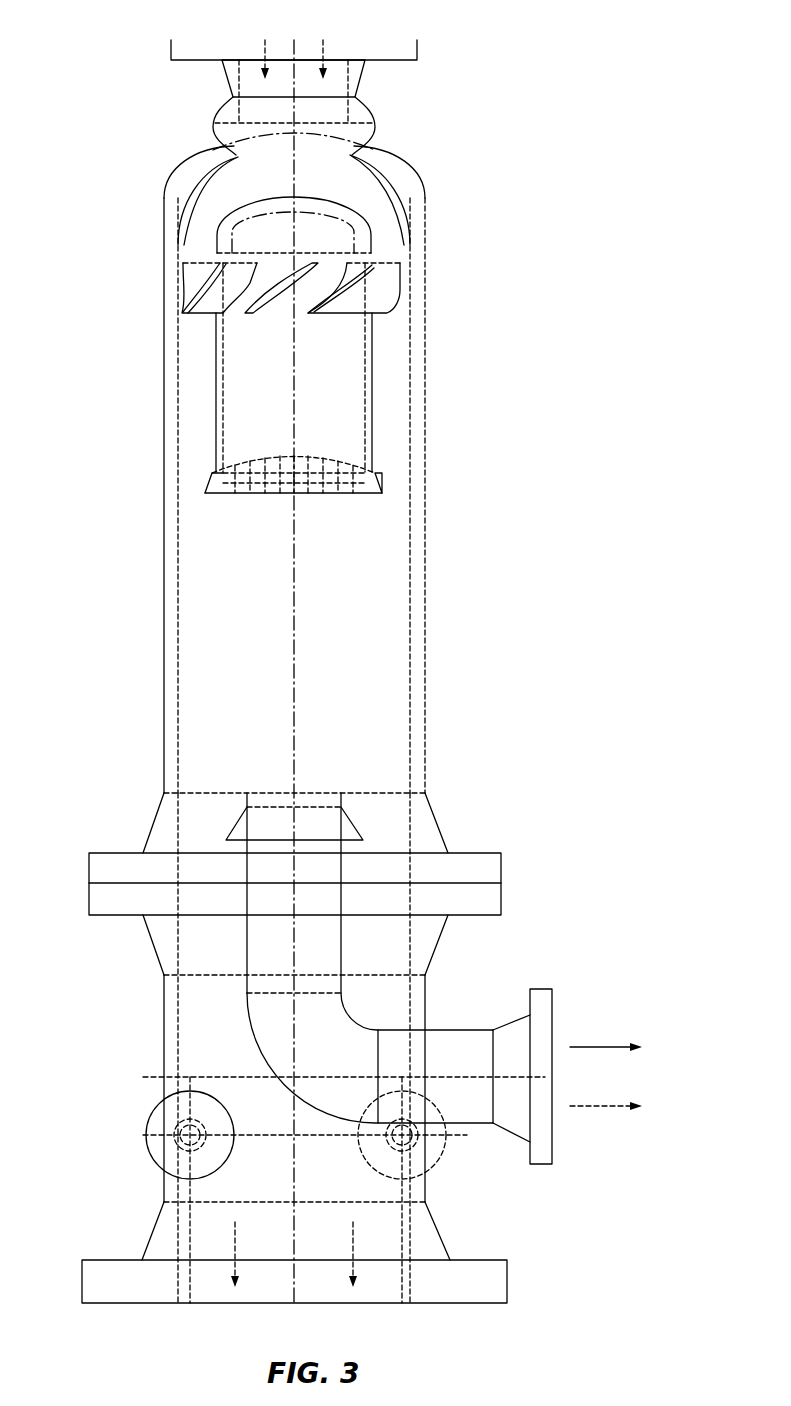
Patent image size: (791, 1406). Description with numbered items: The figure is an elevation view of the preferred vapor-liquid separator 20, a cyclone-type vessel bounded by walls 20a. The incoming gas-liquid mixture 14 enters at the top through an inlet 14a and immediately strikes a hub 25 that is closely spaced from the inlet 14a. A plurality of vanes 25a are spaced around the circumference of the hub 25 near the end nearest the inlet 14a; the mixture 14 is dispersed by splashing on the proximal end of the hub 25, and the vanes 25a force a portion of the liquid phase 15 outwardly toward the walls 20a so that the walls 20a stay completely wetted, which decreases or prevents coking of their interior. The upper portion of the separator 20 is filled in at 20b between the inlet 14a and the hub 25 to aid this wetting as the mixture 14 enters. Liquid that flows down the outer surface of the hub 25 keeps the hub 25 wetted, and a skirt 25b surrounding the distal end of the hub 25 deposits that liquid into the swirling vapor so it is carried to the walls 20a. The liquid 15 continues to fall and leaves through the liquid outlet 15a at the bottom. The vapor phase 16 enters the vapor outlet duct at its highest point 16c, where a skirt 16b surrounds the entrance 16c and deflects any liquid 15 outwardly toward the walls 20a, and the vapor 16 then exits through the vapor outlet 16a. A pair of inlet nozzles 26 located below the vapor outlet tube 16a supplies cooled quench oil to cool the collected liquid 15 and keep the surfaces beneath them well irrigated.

The gas-liquid mixture 14 is at (266, 40).
The inlet 14a is at (362, 80).
The liquid phase 15 is at (354, 1245).
The liquid outlet 15a is at (507, 1280).
The vapor phase 16 is at (596, 1046).
The vapor outlet 16a is at (543, 988).
The skirt 16b is at (357, 826).
The vapor duct entrance 16c is at (270, 795).
The vapor-liquid separator 20 is at (542, 214).
The walls 20a is at (427, 540).
The filled-in upper portion 20b is at (395, 188).
The hub 25 is at (372, 238).
The vanes 25a is at (190, 295).
The skirt 25b is at (382, 485).
The inlet nozzles 26 is at (152, 1118).